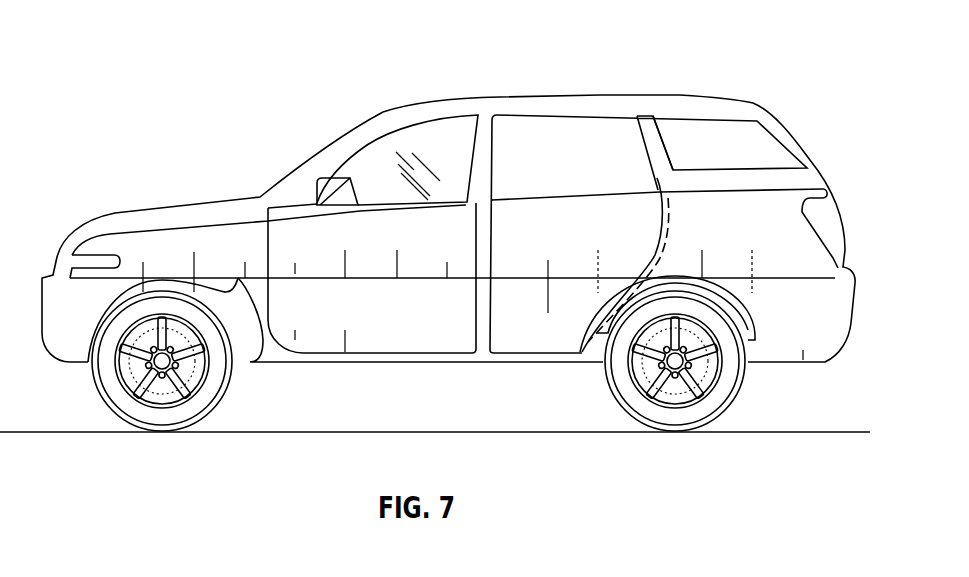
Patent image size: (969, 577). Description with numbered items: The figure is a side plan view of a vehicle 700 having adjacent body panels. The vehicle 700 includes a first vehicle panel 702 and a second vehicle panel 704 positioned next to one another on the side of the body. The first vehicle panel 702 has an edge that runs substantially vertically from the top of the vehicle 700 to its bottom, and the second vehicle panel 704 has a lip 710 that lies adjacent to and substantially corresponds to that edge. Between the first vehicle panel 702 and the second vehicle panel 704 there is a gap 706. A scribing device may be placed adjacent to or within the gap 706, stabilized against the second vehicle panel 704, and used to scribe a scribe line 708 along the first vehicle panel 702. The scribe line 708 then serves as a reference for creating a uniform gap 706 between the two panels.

The vehicle 700 is at (754, 57).
The first vehicle panel 702 is at (805, 260).
The second vehicle panel 704 is at (548, 256).
The gap 706 is at (665, 208).
The scribe line 708 is at (667, 213).
The lip 710 is at (658, 236).